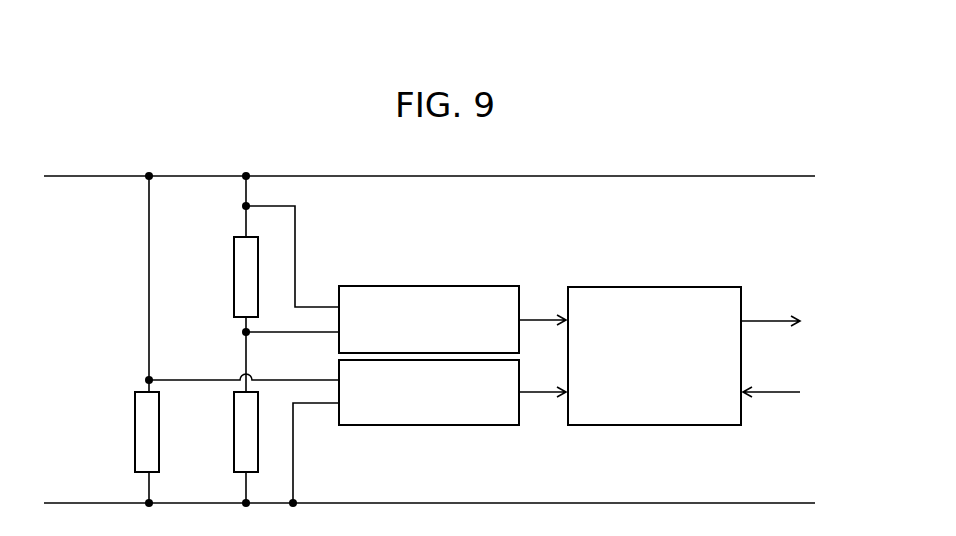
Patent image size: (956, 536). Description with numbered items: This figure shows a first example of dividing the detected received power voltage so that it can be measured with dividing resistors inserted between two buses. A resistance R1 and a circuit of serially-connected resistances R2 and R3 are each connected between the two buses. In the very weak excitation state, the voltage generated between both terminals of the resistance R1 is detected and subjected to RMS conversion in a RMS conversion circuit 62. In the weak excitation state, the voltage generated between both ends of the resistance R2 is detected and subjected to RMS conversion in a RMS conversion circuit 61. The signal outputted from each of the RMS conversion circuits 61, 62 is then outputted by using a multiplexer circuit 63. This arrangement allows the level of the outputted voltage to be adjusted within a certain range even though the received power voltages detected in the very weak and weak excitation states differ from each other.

The resistance R1 is at (135, 437).
The resistance R2 is at (234, 277).
The resistance R3 is at (234, 437).
The RMS conversion circuit 61 is at (422, 286).
The RMS conversion circuit 62 is at (422, 425).
The multiplexer circuit 63 is at (633, 287).